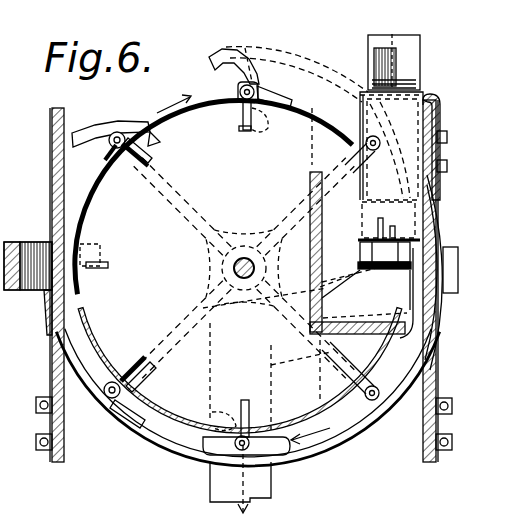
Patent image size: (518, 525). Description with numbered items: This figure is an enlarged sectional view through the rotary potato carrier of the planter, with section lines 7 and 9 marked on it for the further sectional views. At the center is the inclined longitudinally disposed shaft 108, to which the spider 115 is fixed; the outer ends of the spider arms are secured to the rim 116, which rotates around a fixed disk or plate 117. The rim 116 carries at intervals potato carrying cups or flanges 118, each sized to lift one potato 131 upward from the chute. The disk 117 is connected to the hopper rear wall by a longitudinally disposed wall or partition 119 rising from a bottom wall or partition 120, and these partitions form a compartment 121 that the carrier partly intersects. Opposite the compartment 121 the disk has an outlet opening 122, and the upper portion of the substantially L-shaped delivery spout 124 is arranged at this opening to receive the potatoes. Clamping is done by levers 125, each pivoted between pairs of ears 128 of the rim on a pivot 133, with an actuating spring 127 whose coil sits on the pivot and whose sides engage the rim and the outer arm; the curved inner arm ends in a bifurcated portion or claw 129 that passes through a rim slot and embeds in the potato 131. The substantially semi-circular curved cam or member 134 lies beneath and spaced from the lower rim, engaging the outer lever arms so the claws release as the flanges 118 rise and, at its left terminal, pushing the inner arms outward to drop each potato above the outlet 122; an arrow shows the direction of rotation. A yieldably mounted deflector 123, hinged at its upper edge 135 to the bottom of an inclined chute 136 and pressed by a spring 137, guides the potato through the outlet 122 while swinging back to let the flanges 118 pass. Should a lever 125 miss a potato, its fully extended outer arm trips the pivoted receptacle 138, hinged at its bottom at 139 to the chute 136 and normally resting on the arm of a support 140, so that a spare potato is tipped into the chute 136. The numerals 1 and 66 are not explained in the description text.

The bolts 1 is at (58, 462).
The section line 7— 7 is at (329, 271).
The section line 9— 9 is at (310, 268).
The side plate 66 is at (54, 176).
The inclined longitudinally disposed shaft 108 is at (234, 268).
The spider 115 is at (150, 200).
The rim 116 is at (88, 200).
The fixed disk or plate 117 is at (244, 248).
The potato carrying cups or flanges 118 is at (243, 128).
The longitudinally disposed wall or partition 119 is at (312, 278).
The bottom wall or partition 120 is at (312, 366).
The compartment 121 is at (331, 252).
The outlet opening 122 is at (366, 286).
The yieldably mounted deflector 123 is at (360, 258).
The L-shaped delivery spout 124 is at (271, 488).
The lever 125 is at (110, 128).
The actuating spring 127 is at (135, 166).
The ears 128 is at (110, 146).
The bifurcated portion or claw 129 is at (156, 138).
The potato 131 is at (258, 130).
The pivot 133 is at (120, 134).
The curved cam or member 134 is at (48, 302).
The upper edge 135 is at (380, 227).
The inclined chute 136 is at (410, 186).
The spring 137 is at (358, 303).
The pivoted receptacle 138 is at (410, 64).
The hinge or pivot 139 is at (424, 92).
The support 140 is at (442, 112).